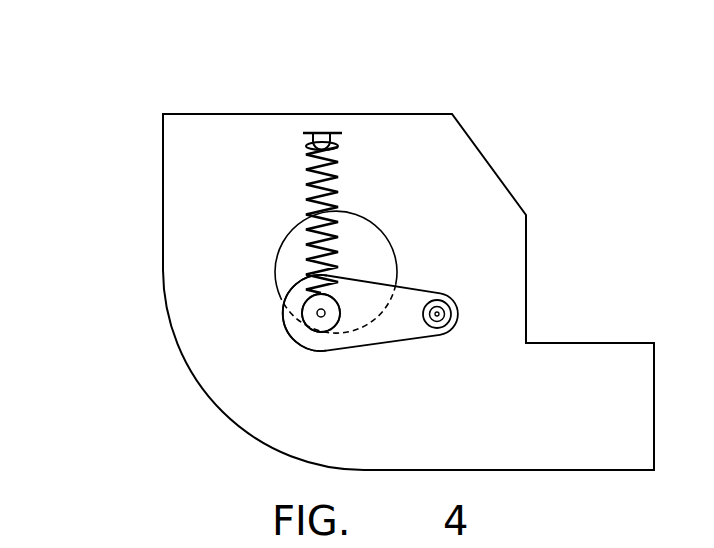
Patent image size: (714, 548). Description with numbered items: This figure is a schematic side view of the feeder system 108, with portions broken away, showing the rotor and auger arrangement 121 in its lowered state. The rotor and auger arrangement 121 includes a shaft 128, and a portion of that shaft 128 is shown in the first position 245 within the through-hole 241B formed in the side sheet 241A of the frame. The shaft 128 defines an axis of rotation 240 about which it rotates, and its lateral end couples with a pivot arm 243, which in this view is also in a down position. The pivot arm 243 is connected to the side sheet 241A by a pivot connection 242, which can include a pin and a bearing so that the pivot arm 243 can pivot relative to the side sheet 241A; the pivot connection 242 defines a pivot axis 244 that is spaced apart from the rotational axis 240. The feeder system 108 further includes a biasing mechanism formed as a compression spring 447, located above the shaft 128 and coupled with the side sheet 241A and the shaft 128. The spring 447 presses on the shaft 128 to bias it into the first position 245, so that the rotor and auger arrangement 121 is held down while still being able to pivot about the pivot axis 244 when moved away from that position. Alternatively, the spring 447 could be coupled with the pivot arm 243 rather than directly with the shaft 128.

The feeder system 108 is at (543, 88).
The rotor and auger arrangement 121 is at (135, 250).
The side sheet 241A is at (224, 143).
The through-hole 241B is at (388, 255).
The biasing mechanism 447 is at (337, 177).
The pivot arm 243 is at (410, 343).
The axis of rotation 240 is at (289, 348).
The shaft 128 is at (337, 320).
The first position 245 is at (260, 335).
The pivot axis 244 is at (452, 322).
The pivot connection 242 is at (442, 300).